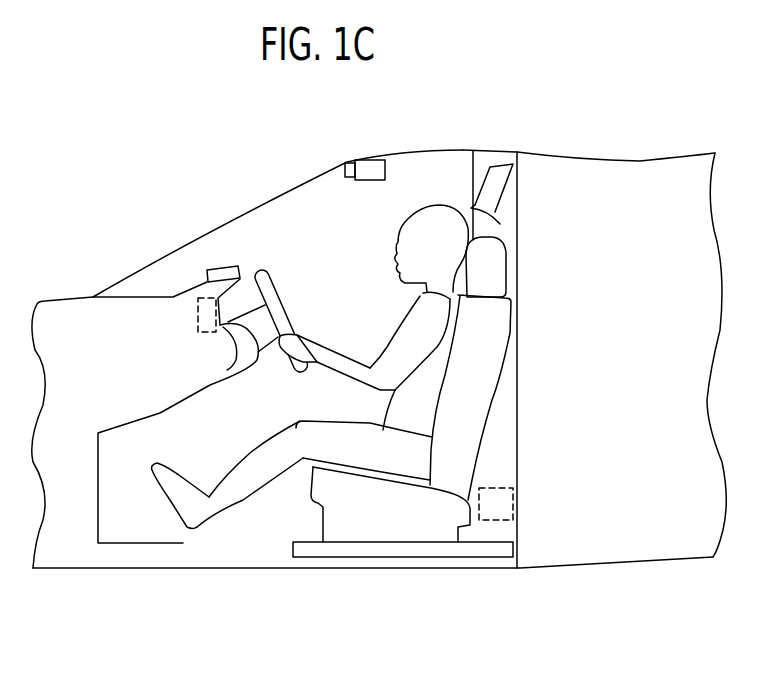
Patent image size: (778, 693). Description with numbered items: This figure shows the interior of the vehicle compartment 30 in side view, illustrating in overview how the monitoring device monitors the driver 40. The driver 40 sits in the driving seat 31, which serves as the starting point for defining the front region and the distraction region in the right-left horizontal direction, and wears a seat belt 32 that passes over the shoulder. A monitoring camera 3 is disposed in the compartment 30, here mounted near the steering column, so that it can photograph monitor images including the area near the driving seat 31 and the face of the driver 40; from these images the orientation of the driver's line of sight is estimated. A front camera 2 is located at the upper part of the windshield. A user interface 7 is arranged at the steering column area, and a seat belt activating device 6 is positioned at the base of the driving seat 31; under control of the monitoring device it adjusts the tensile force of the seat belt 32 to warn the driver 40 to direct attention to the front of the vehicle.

The front camera 2 is at (373, 158).
The monitoring camera 3 is at (222, 265).
The seat belt activating device 6 is at (503, 507).
The user interface 7 is at (202, 285).
The compartment 30 is at (570, 174).
The driving seat 31 is at (518, 328).
The seat belt 32 is at (497, 172).
The driver 40 is at (430, 213).